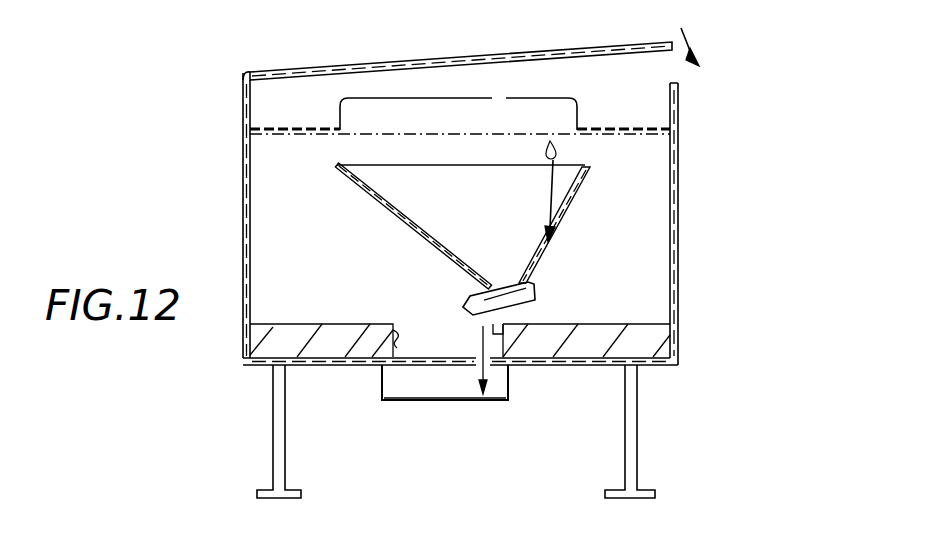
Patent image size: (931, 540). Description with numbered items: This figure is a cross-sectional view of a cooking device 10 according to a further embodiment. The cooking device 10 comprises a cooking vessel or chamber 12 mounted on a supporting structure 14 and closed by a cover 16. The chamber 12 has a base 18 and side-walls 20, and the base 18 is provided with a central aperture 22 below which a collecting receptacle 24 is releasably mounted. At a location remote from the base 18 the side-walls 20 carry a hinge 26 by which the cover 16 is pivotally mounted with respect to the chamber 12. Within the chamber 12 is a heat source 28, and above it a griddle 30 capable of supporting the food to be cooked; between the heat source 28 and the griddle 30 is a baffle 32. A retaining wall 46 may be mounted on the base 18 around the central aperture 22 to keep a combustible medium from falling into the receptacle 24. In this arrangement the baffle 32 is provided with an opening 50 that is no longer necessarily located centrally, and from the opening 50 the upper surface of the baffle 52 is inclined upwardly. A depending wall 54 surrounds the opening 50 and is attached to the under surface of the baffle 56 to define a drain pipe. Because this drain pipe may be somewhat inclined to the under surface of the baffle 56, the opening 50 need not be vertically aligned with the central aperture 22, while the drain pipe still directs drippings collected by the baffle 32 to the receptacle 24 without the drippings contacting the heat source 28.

The cooking device 10 is at (700, 140).
The cooking vessel or chamber 12 is at (678, 285).
The supporting structure 14 is at (637, 423).
The cover 16 is at (312, 68).
The base 18 is at (577, 366).
The side-walls 20 is at (243, 221).
The central aperture 22 is at (420, 366).
The collecting receptacle 24 is at (465, 402).
The hinge 26 is at (244, 79).
The heat source 28 is at (596, 340).
The griddle 30 is at (268, 134).
The baffle 32 is at (399, 227).
The retaining wall 46 is at (393, 348).
The opening 50 is at (498, 289).
The upper surface of the baffle 52 is at (403, 221).
The depending wall 54 is at (512, 297).
The under surface of the baffle 56 is at (560, 233).